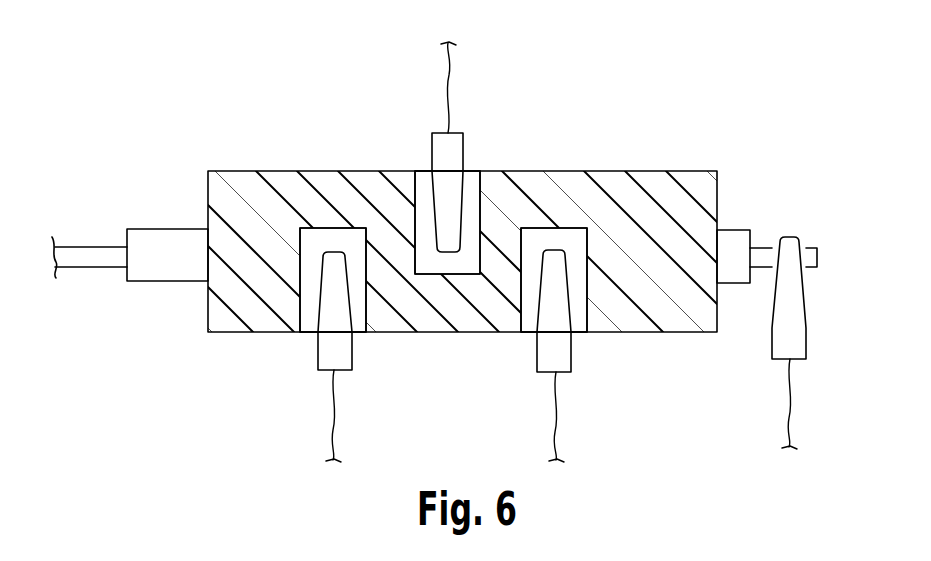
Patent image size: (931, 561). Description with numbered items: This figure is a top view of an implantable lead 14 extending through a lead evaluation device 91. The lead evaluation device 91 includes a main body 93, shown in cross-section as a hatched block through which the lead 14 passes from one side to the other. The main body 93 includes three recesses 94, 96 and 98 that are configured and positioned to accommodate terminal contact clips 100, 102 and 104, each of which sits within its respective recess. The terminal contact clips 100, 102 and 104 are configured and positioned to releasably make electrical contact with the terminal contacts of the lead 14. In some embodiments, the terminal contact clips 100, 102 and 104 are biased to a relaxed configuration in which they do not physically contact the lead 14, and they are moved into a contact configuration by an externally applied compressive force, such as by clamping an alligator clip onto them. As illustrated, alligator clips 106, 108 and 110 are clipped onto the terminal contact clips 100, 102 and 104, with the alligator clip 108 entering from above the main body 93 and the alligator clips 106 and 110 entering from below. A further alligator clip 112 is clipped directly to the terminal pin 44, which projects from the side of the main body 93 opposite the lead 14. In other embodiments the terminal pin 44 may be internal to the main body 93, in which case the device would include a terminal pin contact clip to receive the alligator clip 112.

The lead evaluation device 91 is at (255, 64).
The main body 93 is at (675, 171).
The lead 14 is at (94, 210).
The terminal pin 44 is at (766, 247).
The recess 94 is at (366, 290).
The recess 96 is at (485, 212).
The recess 98 is at (513, 293).
The terminal contact clip 100 is at (330, 233).
The terminal contact clip 102 is at (453, 268).
The terminal contact clip 104 is at (573, 238).
The alligator clip 106 is at (327, 344).
The alligator clip 108 is at (440, 149).
The alligator clip 110 is at (561, 343).
The alligator clip 112 is at (800, 290).